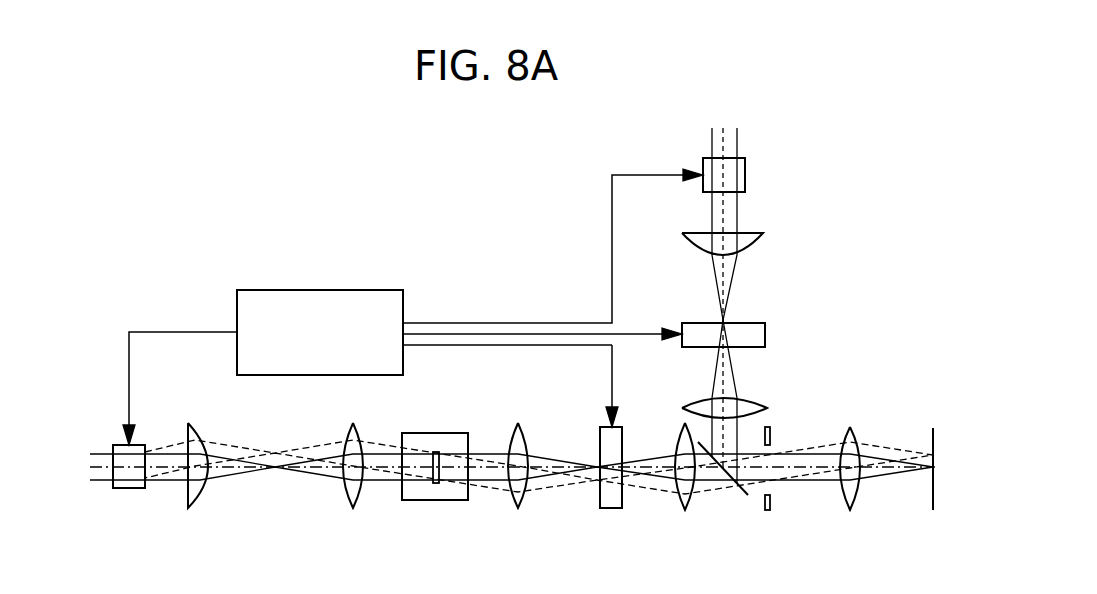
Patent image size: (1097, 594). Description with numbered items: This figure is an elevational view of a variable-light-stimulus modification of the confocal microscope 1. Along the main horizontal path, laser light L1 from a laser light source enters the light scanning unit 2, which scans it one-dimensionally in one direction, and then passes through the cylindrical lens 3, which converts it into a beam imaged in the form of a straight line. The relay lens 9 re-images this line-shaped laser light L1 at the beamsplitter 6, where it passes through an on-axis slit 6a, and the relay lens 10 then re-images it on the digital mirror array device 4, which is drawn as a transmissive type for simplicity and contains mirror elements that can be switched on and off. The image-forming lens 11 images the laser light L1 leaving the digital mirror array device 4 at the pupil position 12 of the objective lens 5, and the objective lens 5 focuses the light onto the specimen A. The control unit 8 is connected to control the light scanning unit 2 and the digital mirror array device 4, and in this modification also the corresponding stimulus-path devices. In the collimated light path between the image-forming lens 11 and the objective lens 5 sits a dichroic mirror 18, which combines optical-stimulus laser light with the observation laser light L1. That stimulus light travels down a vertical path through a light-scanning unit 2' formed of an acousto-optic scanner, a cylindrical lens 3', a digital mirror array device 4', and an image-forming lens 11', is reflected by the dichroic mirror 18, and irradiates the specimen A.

The confocal microscope 1 is at (472, 226).
The light scanning unit 2 is at (175, 447).
The cylindrical lens 3 is at (196, 431).
The digital mirror array device 4 is at (617, 465).
The objective lens 5 is at (855, 507).
The beamsplitter 6 is at (443, 485).
The slit 6a is at (435, 451).
The control unit 8 is at (320, 290).
The relay lens 9 is at (357, 505).
The relay lens 10 is at (523, 507).
The image-forming lens 11 is at (694, 495).
The pupil position 12 is at (770, 500).
The dichroic mirror 18 is at (745, 493).
The light-scanning unit 2' is at (771, 172).
The cylindrical lens 3' is at (763, 250).
The digital mirror array device 4' is at (763, 337).
The image-forming lens 11' is at (764, 399).
The specimen A is at (928, 440).
The laser light L1 is at (308, 445).